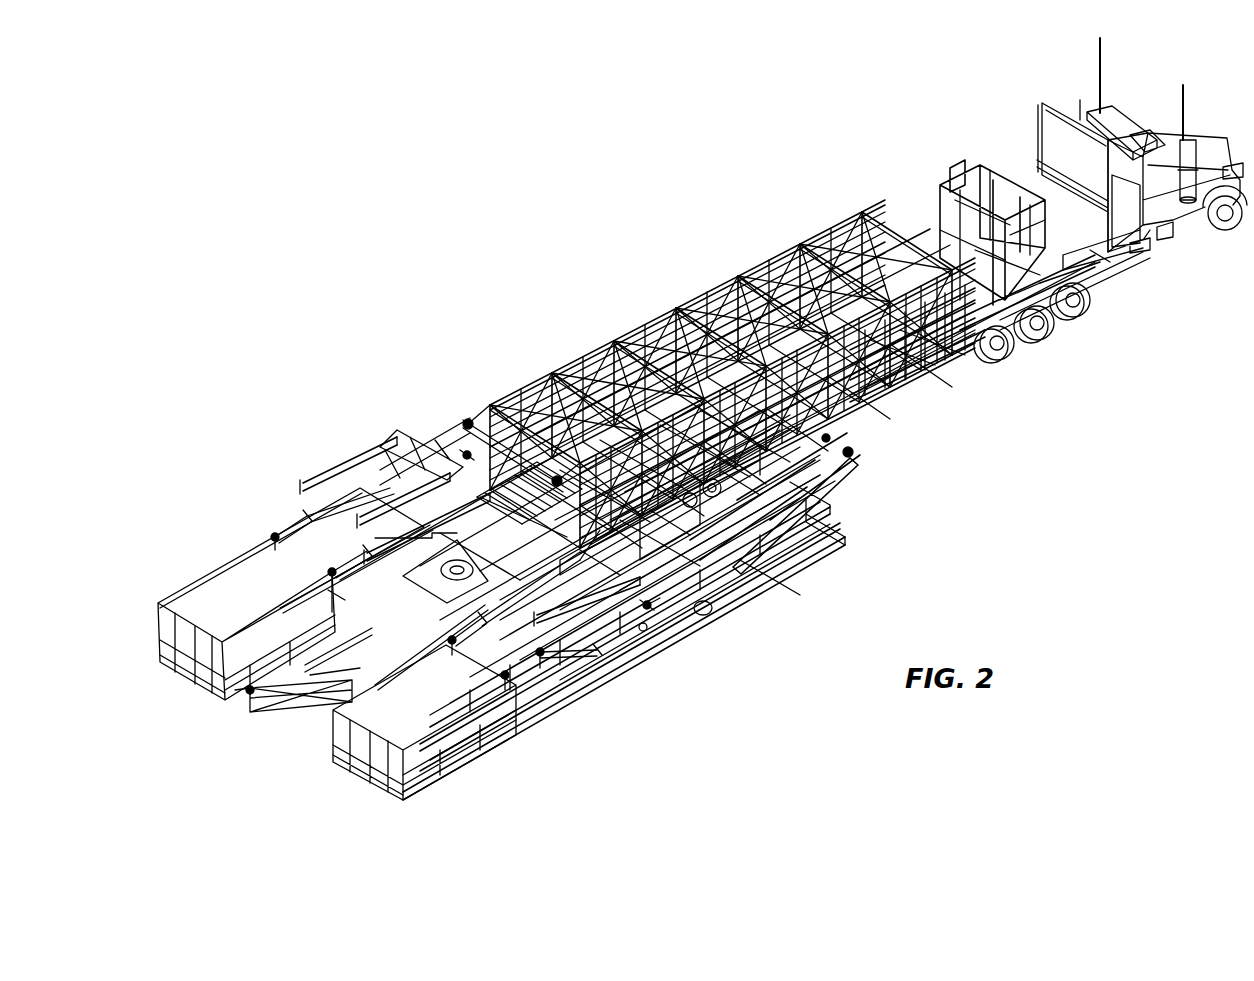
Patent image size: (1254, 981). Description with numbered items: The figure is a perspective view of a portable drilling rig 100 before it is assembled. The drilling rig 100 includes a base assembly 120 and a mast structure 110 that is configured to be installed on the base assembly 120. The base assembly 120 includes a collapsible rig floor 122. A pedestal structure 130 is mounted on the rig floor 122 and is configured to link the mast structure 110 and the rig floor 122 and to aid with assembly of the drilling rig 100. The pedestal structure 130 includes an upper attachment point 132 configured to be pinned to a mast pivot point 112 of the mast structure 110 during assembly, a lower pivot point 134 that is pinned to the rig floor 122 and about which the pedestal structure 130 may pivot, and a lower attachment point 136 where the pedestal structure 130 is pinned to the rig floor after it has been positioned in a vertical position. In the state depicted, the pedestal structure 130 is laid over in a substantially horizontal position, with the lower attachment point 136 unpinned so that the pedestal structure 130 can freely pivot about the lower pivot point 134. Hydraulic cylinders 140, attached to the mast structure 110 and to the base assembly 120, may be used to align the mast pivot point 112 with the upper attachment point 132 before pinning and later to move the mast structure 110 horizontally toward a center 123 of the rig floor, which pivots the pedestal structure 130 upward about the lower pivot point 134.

The portable drilling rig 100 is at (493, 253).
The mast structure 110 is at (775, 263).
The mast pivot point 112 is at (466, 419).
The base assembly 120 is at (170, 688).
The collapsible rig floor 122 is at (205, 597).
The center of rig floor 123 is at (329, 570).
The pedestal structure 130 is at (643, 630).
The upper attachment point 132 is at (464, 453).
The lower pivot point 134 is at (305, 514).
The lower attachment point 136 is at (586, 740).
The hydraulic cylinders 140 is at (815, 488).